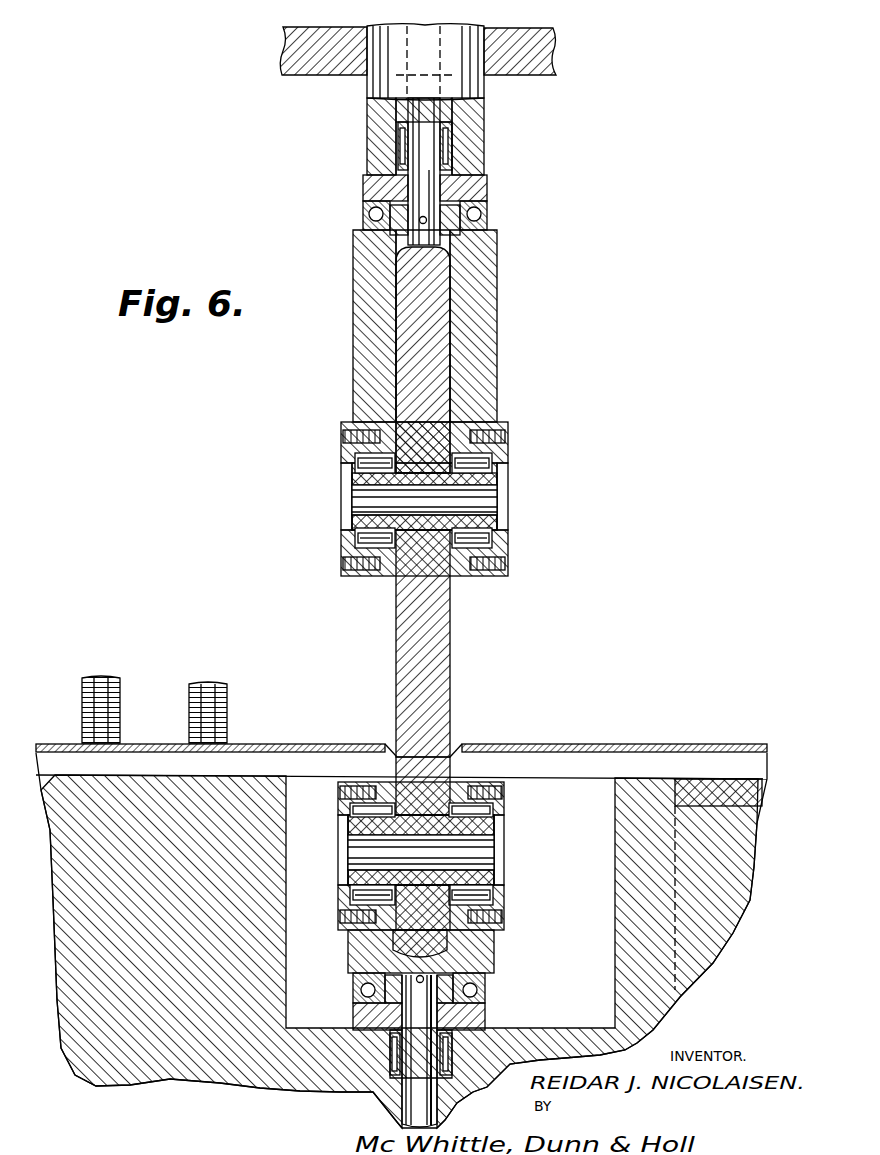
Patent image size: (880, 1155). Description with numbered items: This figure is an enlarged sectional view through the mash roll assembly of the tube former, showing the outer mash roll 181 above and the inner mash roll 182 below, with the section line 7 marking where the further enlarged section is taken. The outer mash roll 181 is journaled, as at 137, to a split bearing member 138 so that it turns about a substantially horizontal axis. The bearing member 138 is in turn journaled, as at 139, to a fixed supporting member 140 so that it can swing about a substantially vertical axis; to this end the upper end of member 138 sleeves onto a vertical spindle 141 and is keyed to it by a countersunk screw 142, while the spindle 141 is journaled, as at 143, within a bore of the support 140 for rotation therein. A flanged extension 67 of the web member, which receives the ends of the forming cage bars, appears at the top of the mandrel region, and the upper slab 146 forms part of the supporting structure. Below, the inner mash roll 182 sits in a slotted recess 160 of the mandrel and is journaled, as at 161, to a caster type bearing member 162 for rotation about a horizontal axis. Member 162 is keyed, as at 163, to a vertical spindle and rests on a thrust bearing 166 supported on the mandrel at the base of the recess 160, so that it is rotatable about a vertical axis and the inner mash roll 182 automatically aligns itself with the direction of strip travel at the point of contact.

The section line 7- 7 is at (502, 62).
The support slab 146 is at (306, 46).
The fixed supporting member 140 is at (485, 150).
The spindle journal 143 is at (455, 130).
The vertical spindle 141 is at (425, 192).
The bearing member journal 139 is at (487, 209).
The countersunk screw 142 is at (420, 222).
The split bearing member 138 is at (366, 297).
The outer mash roll journal 137 is at (353, 526).
The outer mash roll 181 is at (397, 615).
The inner mash roll 182 is at (450, 768).
The flanged extension 67 is at (266, 776).
The slotted recess 160 is at (617, 823).
The inner mash roll journal 161 is at (348, 822).
The caster type bearing member 162 is at (349, 934).
The key 163 is at (354, 1010).
The thrust bearing 166 is at (486, 1002).